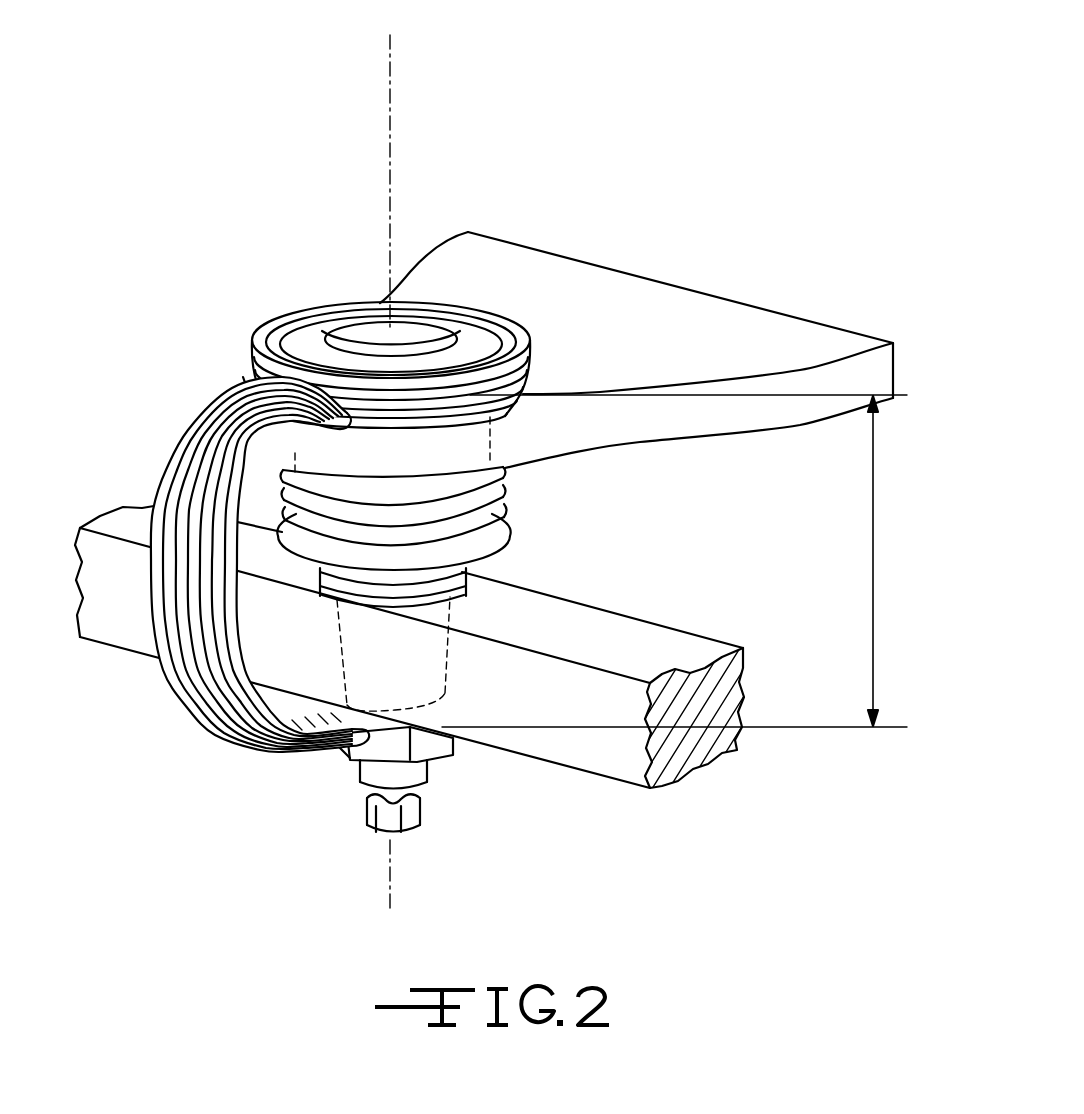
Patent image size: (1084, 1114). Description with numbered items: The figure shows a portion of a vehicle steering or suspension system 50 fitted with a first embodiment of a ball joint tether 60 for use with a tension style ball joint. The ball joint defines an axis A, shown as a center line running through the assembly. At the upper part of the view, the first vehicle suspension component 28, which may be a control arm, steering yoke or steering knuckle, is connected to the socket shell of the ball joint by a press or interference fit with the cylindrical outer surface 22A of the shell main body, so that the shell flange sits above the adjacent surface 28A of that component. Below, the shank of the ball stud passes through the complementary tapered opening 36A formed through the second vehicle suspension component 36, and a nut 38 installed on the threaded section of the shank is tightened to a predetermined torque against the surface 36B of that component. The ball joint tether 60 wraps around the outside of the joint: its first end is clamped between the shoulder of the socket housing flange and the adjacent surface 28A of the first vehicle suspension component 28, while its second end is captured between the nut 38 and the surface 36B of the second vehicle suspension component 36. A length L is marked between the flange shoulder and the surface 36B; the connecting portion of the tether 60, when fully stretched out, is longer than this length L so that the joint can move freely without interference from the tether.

The vehicle steering or suspension system 50 is at (596, 106).
The first vehicle suspension component 28 is at (898, 355).
The adjacent surface of first vehicle suspension component 28A is at (710, 333).
The cylindrical outer surface 22A is at (493, 447).
The second vehicle suspension component 36 is at (452, 687).
The tapered opening 36A is at (446, 672).
The surface of second vehicle suspension component 36B is at (625, 785).
The nut 38 is at (423, 749).
The ball joint tether 60 is at (328, 770).
The axis A is at (391, 42).
The length L is at (873, 560).